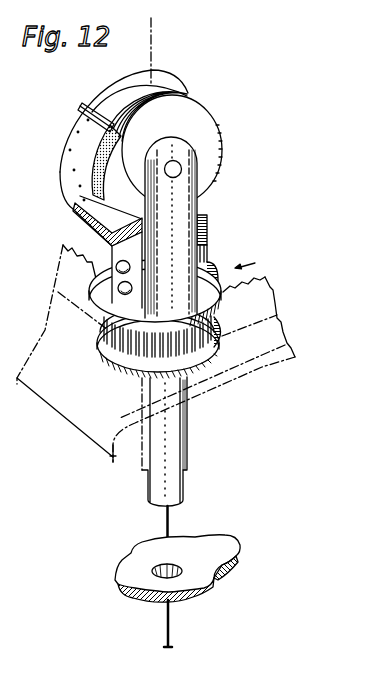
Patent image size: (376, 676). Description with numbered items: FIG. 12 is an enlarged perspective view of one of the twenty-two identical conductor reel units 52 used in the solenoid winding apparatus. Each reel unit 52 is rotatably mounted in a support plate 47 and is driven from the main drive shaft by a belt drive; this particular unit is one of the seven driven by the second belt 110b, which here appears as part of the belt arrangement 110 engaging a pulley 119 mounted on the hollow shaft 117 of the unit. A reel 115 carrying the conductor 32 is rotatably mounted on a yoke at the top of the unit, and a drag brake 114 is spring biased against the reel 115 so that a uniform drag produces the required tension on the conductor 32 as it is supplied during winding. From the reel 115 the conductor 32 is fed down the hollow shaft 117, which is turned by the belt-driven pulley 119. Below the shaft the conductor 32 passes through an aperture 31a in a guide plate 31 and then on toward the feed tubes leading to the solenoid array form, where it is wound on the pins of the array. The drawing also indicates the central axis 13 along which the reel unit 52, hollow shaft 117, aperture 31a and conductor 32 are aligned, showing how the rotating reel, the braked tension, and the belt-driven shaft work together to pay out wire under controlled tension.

The axis line 13 is at (154, 51).
The reel unit 52 is at (146, 180).
The reel 115 is at (222, 114).
The drag brake 114 is at (84, 144).
The bracket 110 is at (250, 291).
The second belt 110b is at (56, 351).
The pulley 119 is at (212, 364).
The support plate 47 is at (100, 458).
The hollow shaft 117 is at (186, 486).
The guide plate 31 is at (190, 577).
The aperture 31a is at (180, 577).
The conductor 32 is at (167, 623).